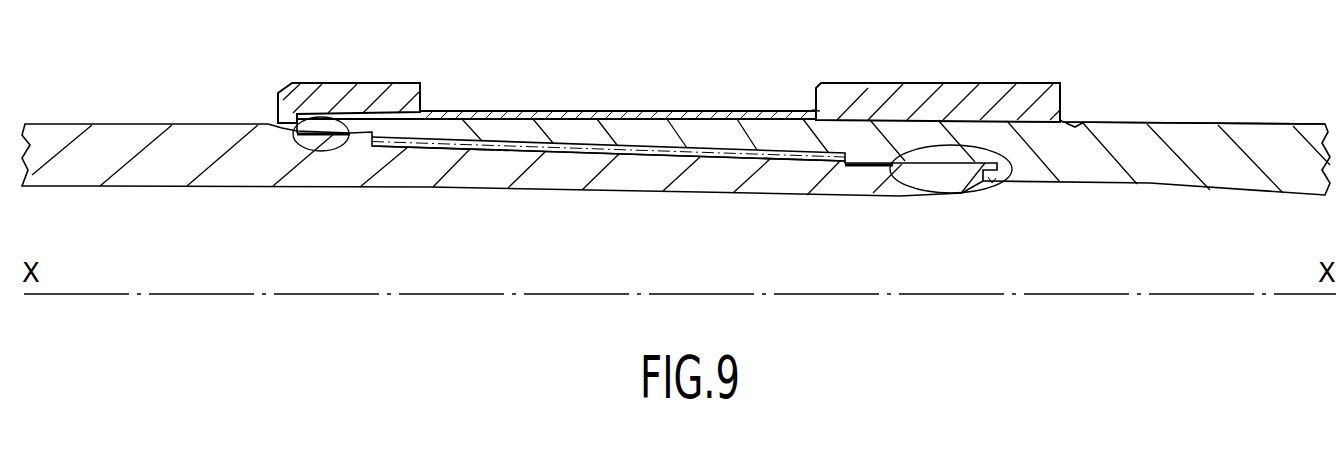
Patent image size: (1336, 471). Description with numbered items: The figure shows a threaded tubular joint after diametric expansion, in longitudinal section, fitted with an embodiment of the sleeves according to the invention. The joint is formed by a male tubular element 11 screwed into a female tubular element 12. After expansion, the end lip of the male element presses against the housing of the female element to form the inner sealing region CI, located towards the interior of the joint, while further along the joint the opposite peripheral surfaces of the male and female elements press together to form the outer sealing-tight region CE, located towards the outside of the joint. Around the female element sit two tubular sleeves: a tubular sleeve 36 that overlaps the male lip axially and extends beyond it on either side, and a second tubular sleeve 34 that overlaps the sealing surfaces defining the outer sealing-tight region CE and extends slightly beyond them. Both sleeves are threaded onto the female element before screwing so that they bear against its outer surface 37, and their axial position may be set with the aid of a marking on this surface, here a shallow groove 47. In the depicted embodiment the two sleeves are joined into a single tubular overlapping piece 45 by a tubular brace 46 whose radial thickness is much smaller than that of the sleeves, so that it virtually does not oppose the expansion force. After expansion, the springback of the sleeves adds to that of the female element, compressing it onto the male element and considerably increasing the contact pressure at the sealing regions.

The male tubular element 11 is at (600, 173).
The female tubular element 12 is at (730, 137).
The tubular sleeve 34 is at (358, 83).
The tubular sleeve 36 is at (905, 83).
The outer surface 37 is at (1110, 122).
The tubular overlapping piece 45 is at (816, 109).
The tubular brace 46 is at (525, 108).
The shallow groove 47 is at (1075, 127).
The outer sealing-tight region CE is at (318, 157).
The inner sealing region CI is at (902, 188).